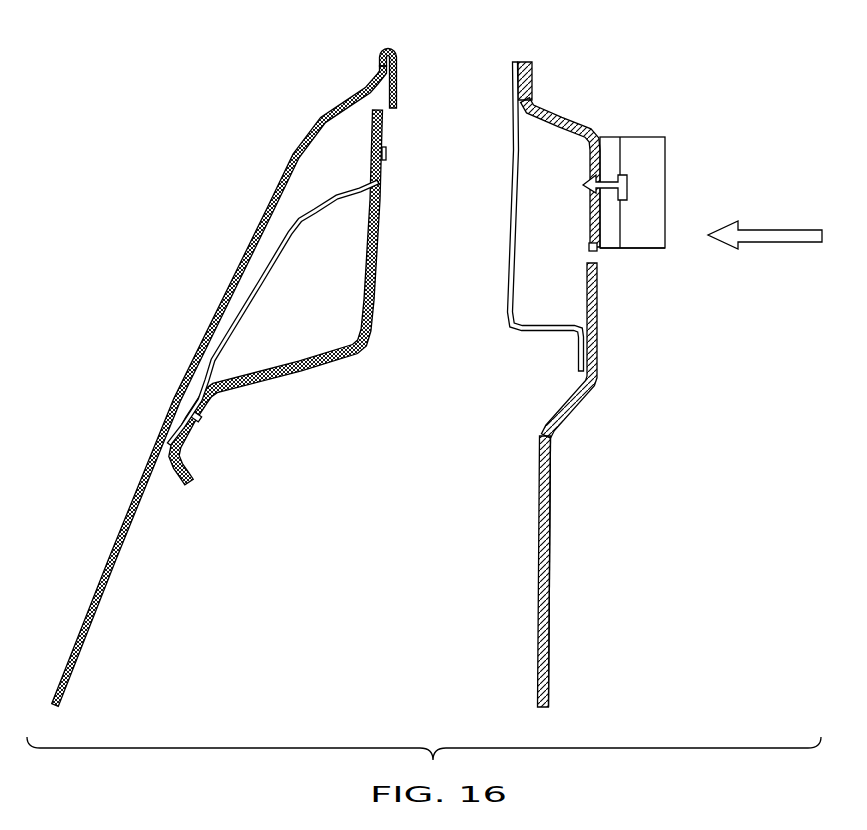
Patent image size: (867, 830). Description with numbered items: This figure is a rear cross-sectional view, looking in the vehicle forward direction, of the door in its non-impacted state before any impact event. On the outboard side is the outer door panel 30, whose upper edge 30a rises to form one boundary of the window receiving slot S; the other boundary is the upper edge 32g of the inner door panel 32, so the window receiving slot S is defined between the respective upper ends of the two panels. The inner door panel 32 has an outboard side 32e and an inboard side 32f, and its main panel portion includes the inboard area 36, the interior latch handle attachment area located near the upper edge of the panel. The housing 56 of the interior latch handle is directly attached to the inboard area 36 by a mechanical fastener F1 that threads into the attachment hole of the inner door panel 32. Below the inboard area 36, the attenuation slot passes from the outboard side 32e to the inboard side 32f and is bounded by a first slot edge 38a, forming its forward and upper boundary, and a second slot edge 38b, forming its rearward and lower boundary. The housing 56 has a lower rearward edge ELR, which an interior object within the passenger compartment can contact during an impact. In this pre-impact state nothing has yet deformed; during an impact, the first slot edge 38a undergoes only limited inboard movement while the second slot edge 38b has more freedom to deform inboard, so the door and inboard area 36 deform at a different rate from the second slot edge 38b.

The outer door panel 30 is at (90, 623).
The upper edge of the outer door panel 30a is at (397, 75).
The inner door panel 32 is at (555, 367).
The upper edge of the inner door panel 32g is at (517, 75).
The outboard side of the inner door panel 32e is at (543, 583).
The inboard side of the inner door panel 32f is at (555, 546).
The inboard area 36 is at (603, 156).
The first slot edge 38a is at (587, 248).
The second slot edge 38b is at (588, 264).
The housing 56 is at (633, 249).
The window receiving slot S is at (513, 88).
The mechanical fastener F1 is at (628, 183).
The lower rearward edge of the housing ELR is at (652, 249).